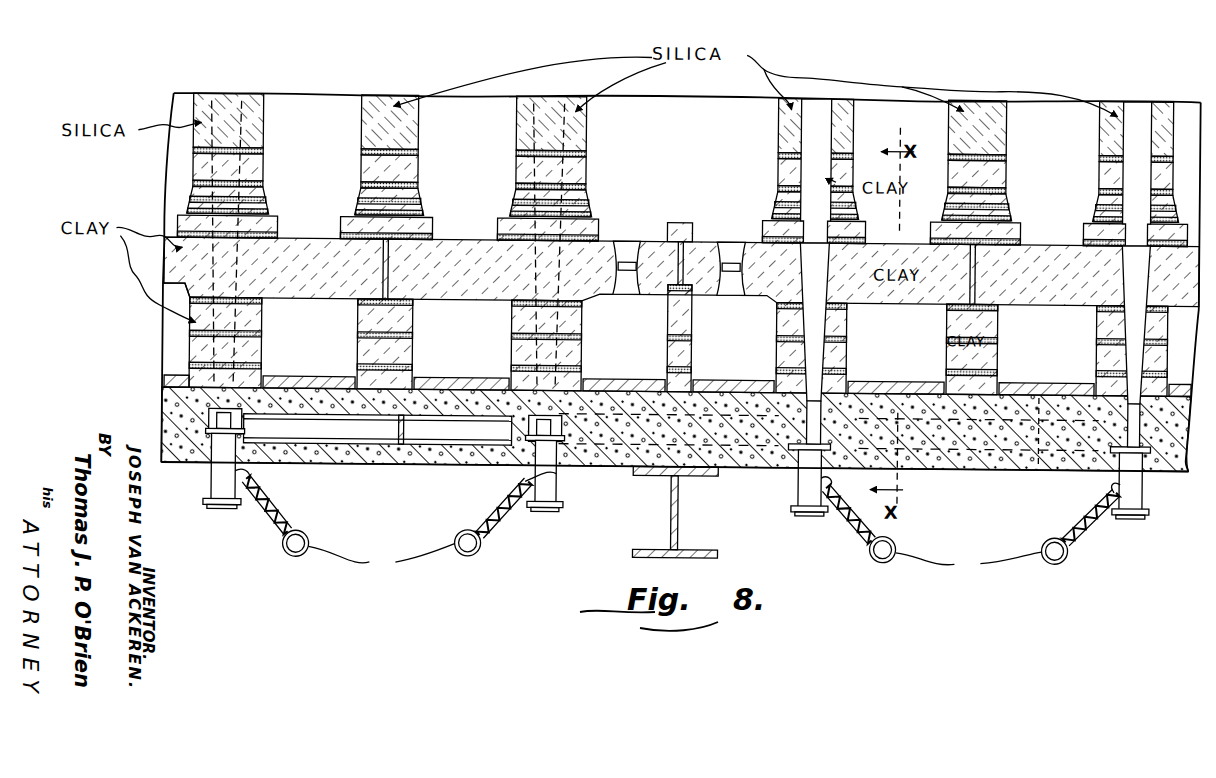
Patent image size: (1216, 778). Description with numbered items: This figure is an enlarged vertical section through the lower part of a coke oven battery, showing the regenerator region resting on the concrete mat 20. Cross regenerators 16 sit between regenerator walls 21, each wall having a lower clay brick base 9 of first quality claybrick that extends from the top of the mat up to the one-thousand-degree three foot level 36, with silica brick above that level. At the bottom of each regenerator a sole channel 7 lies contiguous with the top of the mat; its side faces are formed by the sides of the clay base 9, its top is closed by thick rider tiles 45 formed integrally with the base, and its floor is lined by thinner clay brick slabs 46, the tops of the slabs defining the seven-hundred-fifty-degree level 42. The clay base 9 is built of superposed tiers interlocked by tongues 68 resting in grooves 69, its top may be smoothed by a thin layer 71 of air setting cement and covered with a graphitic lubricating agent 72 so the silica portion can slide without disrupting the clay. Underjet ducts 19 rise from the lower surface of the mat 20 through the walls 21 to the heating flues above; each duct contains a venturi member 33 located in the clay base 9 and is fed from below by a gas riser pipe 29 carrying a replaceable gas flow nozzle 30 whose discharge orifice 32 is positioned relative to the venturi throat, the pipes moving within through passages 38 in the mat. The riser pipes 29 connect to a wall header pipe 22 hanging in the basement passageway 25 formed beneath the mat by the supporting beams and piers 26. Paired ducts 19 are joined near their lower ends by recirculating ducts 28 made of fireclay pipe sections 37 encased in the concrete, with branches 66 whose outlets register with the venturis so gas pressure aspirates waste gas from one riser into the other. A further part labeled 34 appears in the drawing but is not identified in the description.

The cross regenerator 16 is at (291, 124).
The three foot level 36 is at (262, 156).
The graphitic lubricating agent 72 is at (520, 151).
The thin layer of air setting cement 71 is at (522, 163).
The groove 69 is at (1005, 193).
The tongue 68 is at (960, 167).
The regenerator wall 21 is at (513, 185).
The underjet duct 19 is at (1098, 185).
The clay brick base 9 is at (582, 323).
The level of the tops of the sole flues 42 is at (654, 240).
The rider tile 45 is at (702, 242).
The sole channel 7 is at (680, 338).
The clay brick slab 46 is at (324, 375).
The venturi member 33 is at (500, 356).
The discharge orifice 32 is at (676, 429).
The concrete mat 20 is at (347, 463).
The fireclay pipe section 37 is at (408, 464).
The anchor plate 34 is at (1152, 440).
The branch of recirculating duct 66 is at (210, 414).
The gas flow nozzle 30 is at (800, 477).
The gas riser pipe 29 is at (818, 292).
The through passage 38 is at (1162, 504).
The wall header pipe 22 is at (674, 554).
The battery supporting beam and pier 26 is at (682, 498).
The recirculating duct 28 is at (455, 463).
The basement passageway 25 is at (550, 584).